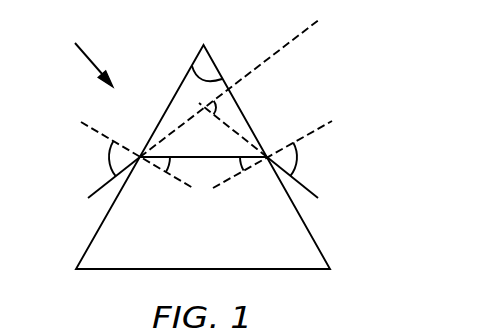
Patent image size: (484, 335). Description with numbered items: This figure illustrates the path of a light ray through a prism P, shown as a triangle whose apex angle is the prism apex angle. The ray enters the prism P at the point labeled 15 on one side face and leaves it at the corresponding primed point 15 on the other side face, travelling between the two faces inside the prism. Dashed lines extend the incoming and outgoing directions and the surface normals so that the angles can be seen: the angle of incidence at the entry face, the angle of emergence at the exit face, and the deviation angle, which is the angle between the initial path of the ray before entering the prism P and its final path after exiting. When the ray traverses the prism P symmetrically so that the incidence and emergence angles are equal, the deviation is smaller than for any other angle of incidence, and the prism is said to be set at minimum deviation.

The ray path 15 is at (209, 188).
The prism P is at (88, 52).